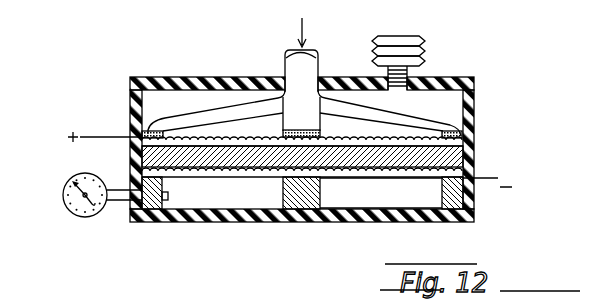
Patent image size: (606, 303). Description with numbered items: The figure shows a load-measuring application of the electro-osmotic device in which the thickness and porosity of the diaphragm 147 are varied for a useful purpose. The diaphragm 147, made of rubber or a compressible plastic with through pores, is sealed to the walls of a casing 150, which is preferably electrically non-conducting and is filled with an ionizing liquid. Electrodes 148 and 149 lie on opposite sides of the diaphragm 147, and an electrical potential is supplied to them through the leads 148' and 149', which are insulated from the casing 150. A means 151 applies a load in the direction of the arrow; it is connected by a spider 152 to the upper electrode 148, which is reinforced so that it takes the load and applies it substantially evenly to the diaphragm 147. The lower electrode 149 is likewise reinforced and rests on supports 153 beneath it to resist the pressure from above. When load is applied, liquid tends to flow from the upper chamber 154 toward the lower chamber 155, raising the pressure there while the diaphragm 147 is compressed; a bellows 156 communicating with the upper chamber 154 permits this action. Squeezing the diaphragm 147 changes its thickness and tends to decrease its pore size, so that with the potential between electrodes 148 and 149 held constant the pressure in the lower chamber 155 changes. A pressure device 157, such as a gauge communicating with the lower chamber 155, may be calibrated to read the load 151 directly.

The diaphragm 147 is at (474, 161).
The upper electrode 148 is at (302, 133).
The lead 148' is at (115, 122).
The lower electrode 149 is at (302, 187).
The lead 149' is at (489, 174).
The casing 150 is at (171, 77).
The load applying means 151 is at (297, 62).
The spider 152 is at (207, 112).
The supports 153 is at (146, 223).
The upper chamber 154 is at (432, 103).
The lower chamber 155 is at (393, 200).
The bellows 156 is at (396, 46).
The pressure device 157 is at (60, 198).